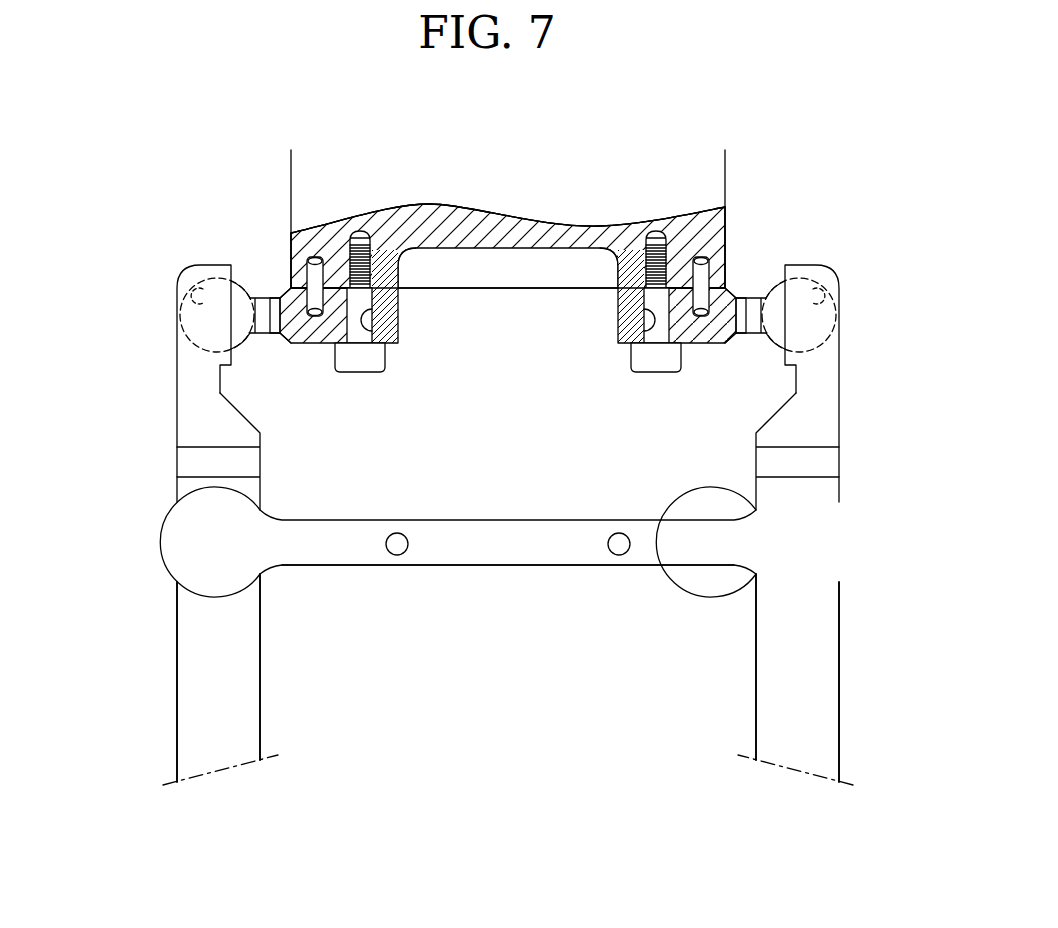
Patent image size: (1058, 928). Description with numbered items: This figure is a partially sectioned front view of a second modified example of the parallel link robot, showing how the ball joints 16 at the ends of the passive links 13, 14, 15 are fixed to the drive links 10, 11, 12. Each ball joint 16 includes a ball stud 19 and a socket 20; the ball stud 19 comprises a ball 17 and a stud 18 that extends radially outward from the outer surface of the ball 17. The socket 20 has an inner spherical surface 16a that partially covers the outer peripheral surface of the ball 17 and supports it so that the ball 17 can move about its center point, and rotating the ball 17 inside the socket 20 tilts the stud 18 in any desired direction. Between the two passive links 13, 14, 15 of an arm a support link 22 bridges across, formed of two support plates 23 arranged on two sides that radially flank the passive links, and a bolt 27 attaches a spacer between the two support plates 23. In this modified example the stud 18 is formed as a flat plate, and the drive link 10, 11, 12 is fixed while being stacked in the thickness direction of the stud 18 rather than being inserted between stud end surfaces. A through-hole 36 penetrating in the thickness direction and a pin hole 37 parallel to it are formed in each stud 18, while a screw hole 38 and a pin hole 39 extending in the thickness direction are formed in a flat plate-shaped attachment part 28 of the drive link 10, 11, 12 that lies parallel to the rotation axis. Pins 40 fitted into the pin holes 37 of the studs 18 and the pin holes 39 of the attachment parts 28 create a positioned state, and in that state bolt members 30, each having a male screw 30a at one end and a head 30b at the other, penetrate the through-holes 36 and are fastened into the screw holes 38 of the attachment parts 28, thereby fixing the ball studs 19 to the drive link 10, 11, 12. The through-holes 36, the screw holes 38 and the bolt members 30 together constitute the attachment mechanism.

The drive link 10 is at (278, 170).
The drive link 11 is at (508, 246).
The drive link 12 is at (508, 246).
The passive link 13 is at (876, 690).
The passive link 14 is at (508, 678).
The passive link 15 is at (508, 678).
The ball joint 16 is at (268, 380).
The inner spherical surface 16a is at (195, 292).
The ball 17 is at (242, 350).
The stud 18 is at (282, 342).
The ball stud 19 is at (258, 288).
The socket 20 is at (177, 322).
The support link 22 is at (336, 583).
The support plate 23 is at (508, 566).
The bolt 27 is at (397, 556).
The attachment part 28 is at (400, 291).
The bolt member 30 is at (508, 310).
The male screw 30a is at (400, 262).
The head 30b is at (360, 374).
The through-hole 36 is at (374, 320).
The pin hole 37 is at (315, 318).
The screw hole 38 is at (356, 231).
The pin hole 39 is at (313, 256).
The pin 40 is at (303, 284).